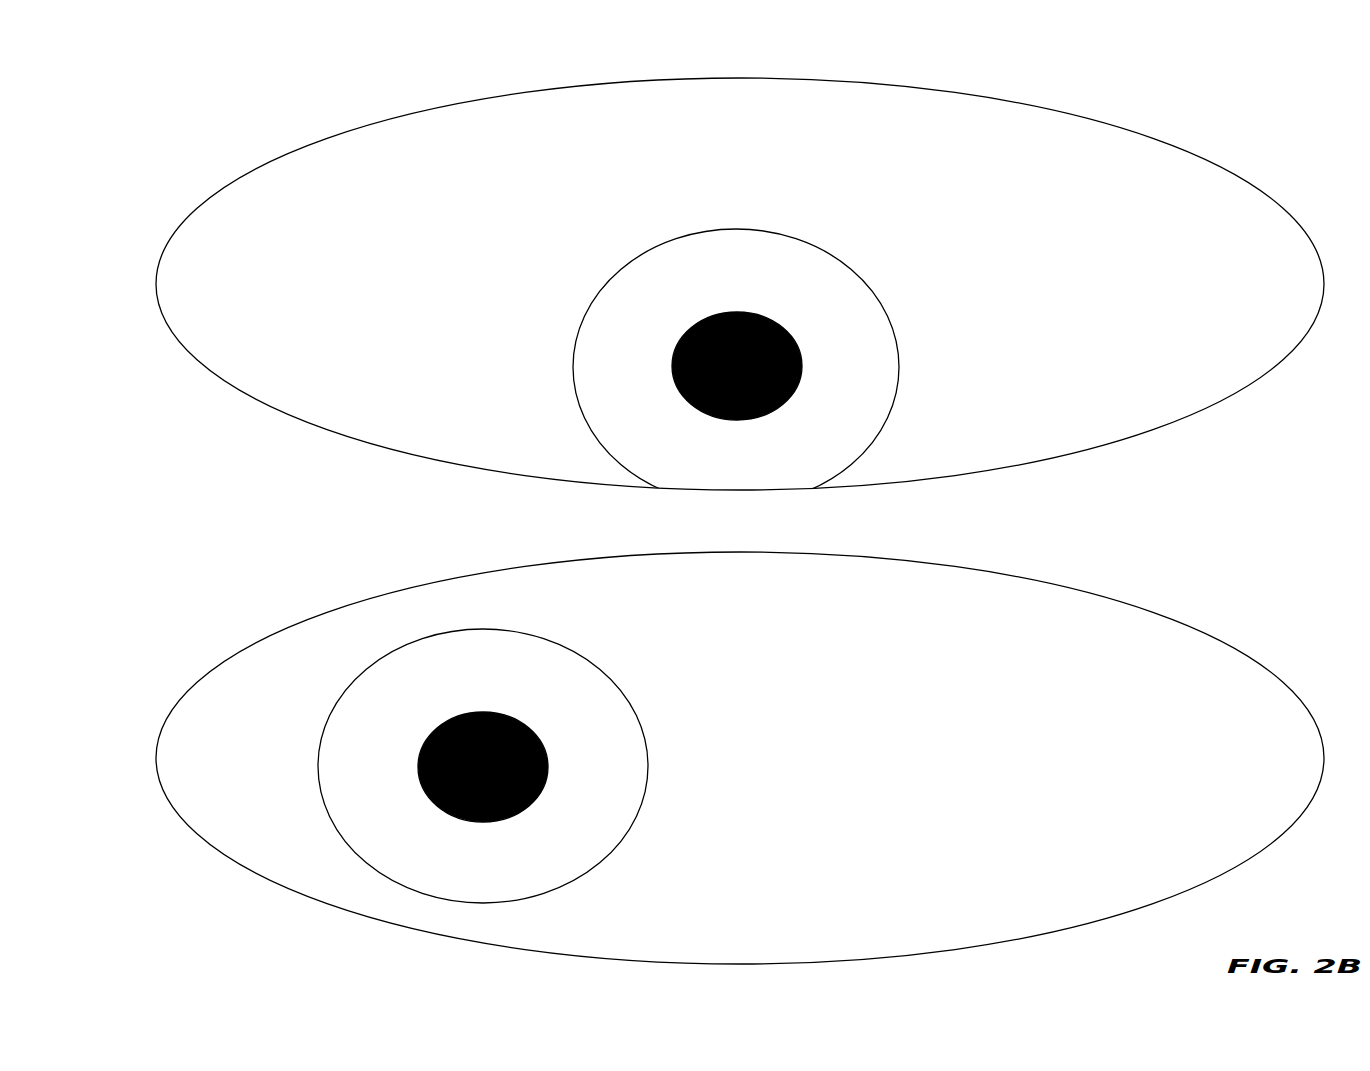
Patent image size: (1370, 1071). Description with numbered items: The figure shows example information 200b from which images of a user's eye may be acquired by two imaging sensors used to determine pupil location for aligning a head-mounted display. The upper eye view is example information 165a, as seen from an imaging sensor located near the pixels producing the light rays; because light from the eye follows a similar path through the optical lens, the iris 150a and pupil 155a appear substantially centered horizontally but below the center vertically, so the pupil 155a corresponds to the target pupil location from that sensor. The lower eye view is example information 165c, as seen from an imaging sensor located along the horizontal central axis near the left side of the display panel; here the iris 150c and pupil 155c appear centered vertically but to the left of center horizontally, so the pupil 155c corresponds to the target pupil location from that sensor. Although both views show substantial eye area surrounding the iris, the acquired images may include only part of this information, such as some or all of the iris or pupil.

The example information 200b is at (165, 125).
The example information 165a is at (215, 196).
The iris 150a is at (894, 332).
The pupil 155a is at (800, 378).
The example information 165c is at (210, 672).
The iris 150c is at (644, 735).
The pupil 155c is at (548, 776).